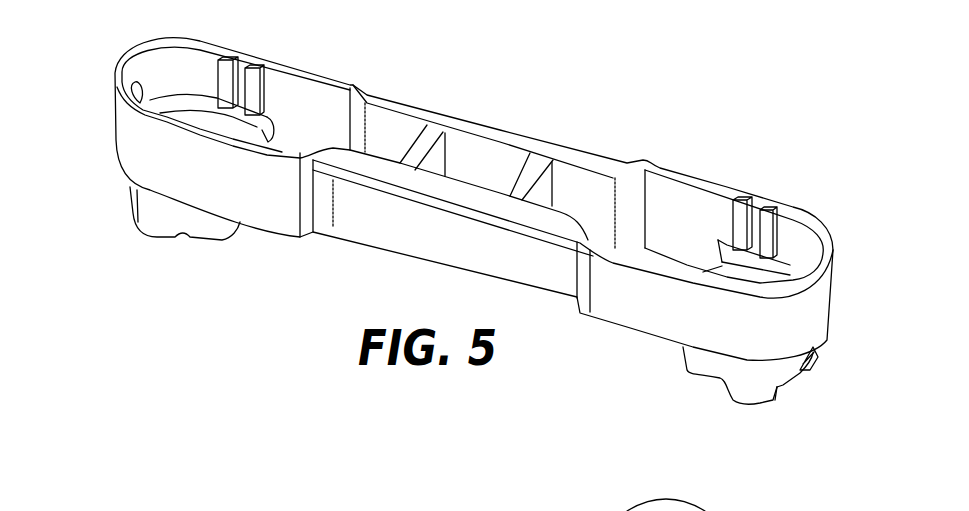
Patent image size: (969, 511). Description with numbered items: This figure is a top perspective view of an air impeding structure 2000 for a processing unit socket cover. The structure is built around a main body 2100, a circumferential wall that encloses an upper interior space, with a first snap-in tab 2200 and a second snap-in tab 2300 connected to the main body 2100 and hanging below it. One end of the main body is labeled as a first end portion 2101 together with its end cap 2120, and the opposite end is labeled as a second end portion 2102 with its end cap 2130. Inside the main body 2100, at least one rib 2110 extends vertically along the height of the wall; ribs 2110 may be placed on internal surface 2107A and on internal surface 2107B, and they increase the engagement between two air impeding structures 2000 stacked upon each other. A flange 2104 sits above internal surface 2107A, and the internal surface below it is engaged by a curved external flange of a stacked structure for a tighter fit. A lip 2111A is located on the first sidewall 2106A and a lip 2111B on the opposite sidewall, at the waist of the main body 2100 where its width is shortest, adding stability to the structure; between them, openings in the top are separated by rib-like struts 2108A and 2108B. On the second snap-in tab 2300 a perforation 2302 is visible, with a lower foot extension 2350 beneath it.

The air impeding structure 2000 is at (476, 214).
The main body 2100 is at (476, 181).
The first end portion 2101 is at (189, 112).
The first end cap 2120 is at (188, 109).
The second end portion 2102 is at (792, 240).
The second end cap 2130 is at (814, 281).
The flange 2104 is at (131, 83).
The first sidewall 2106A is at (372, 232).
The internal surface 2107A is at (314, 90).
The internal surface 2107B is at (690, 193).
The first rib 2108A is at (418, 137).
The second rib 2108B is at (518, 160).
The rib 2110 is at (244, 60).
The lip 2111A is at (460, 215).
The lip 2111B is at (465, 112).
The first snap-in tab 2200 is at (152, 238).
The second snap-in tab 2300 is at (779, 386).
The perforation 2302 is at (818, 373).
The foot extension 2350 is at (800, 388).